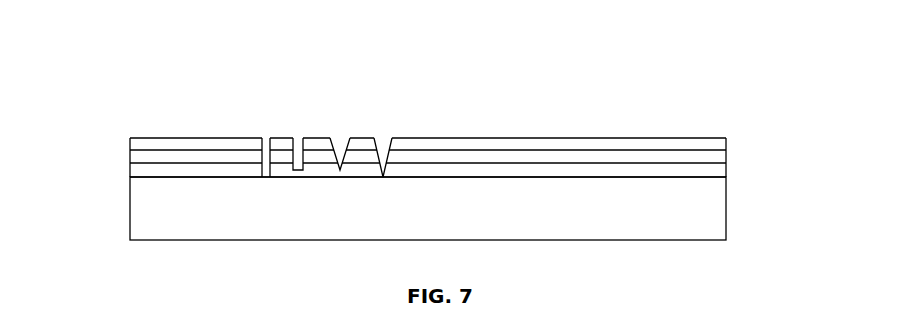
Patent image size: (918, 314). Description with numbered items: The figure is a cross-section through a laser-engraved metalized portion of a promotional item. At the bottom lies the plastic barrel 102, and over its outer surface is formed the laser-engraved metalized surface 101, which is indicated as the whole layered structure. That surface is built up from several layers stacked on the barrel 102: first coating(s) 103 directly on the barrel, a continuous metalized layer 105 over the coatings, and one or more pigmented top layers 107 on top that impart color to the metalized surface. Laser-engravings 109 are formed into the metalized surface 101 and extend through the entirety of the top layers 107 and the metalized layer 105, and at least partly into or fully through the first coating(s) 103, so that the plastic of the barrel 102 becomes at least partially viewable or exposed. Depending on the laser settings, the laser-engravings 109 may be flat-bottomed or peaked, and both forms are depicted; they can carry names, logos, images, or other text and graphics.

The laser-engraved metalized surface 101 is at (757, 118).
The barrel 102 is at (428, 208).
The first coating 103 is at (723, 168).
The continuous metalized layer 105 is at (140, 157).
The pigmented top layer 107 is at (593, 145).
The laser-engravings 109 is at (388, 125).